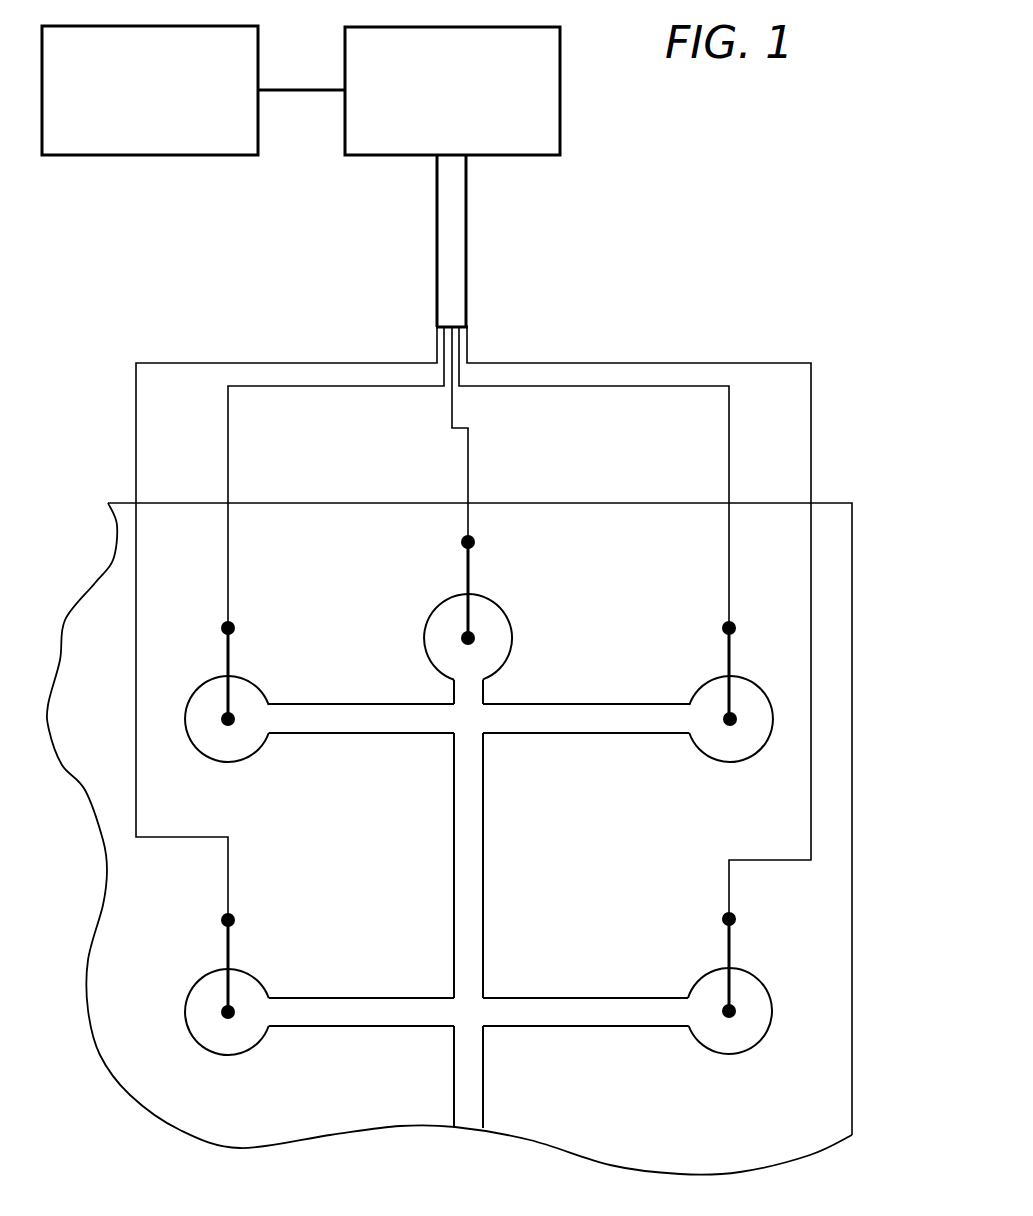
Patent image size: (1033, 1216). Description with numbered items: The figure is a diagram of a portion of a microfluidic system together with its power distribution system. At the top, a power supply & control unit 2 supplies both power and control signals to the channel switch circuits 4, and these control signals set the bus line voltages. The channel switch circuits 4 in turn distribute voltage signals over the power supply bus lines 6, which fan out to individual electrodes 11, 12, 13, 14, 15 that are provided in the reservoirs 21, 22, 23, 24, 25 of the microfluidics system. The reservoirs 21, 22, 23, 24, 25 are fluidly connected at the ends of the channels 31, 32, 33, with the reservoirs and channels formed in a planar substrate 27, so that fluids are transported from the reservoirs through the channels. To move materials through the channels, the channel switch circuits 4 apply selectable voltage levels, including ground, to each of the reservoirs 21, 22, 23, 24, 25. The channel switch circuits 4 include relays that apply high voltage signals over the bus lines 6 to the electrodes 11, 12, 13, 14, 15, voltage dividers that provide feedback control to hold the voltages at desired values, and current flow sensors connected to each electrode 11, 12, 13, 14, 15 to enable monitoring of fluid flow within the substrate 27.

The power supply & control unit 2 is at (256, 51).
The channel switch circuits 4 is at (557, 51).
The power supply bus lines 6 is at (467, 262).
The electrode 11 is at (474, 541).
The electrode 12 is at (233, 627).
The electrode 13 is at (233, 919).
The electrode 14 is at (722, 628).
The electrode 15 is at (735, 915).
The reservoir 21 is at (494, 656).
The reservoir 22 is at (232, 752).
The reservoir 23 is at (232, 1045).
The reservoir 24 is at (748, 743).
The reservoir 25 is at (718, 1035).
The planar substrate 27 is at (768, 1139).
The channel 31 is at (470, 916).
The channel 32 is at (500, 725).
The channel 33 is at (517, 1005).